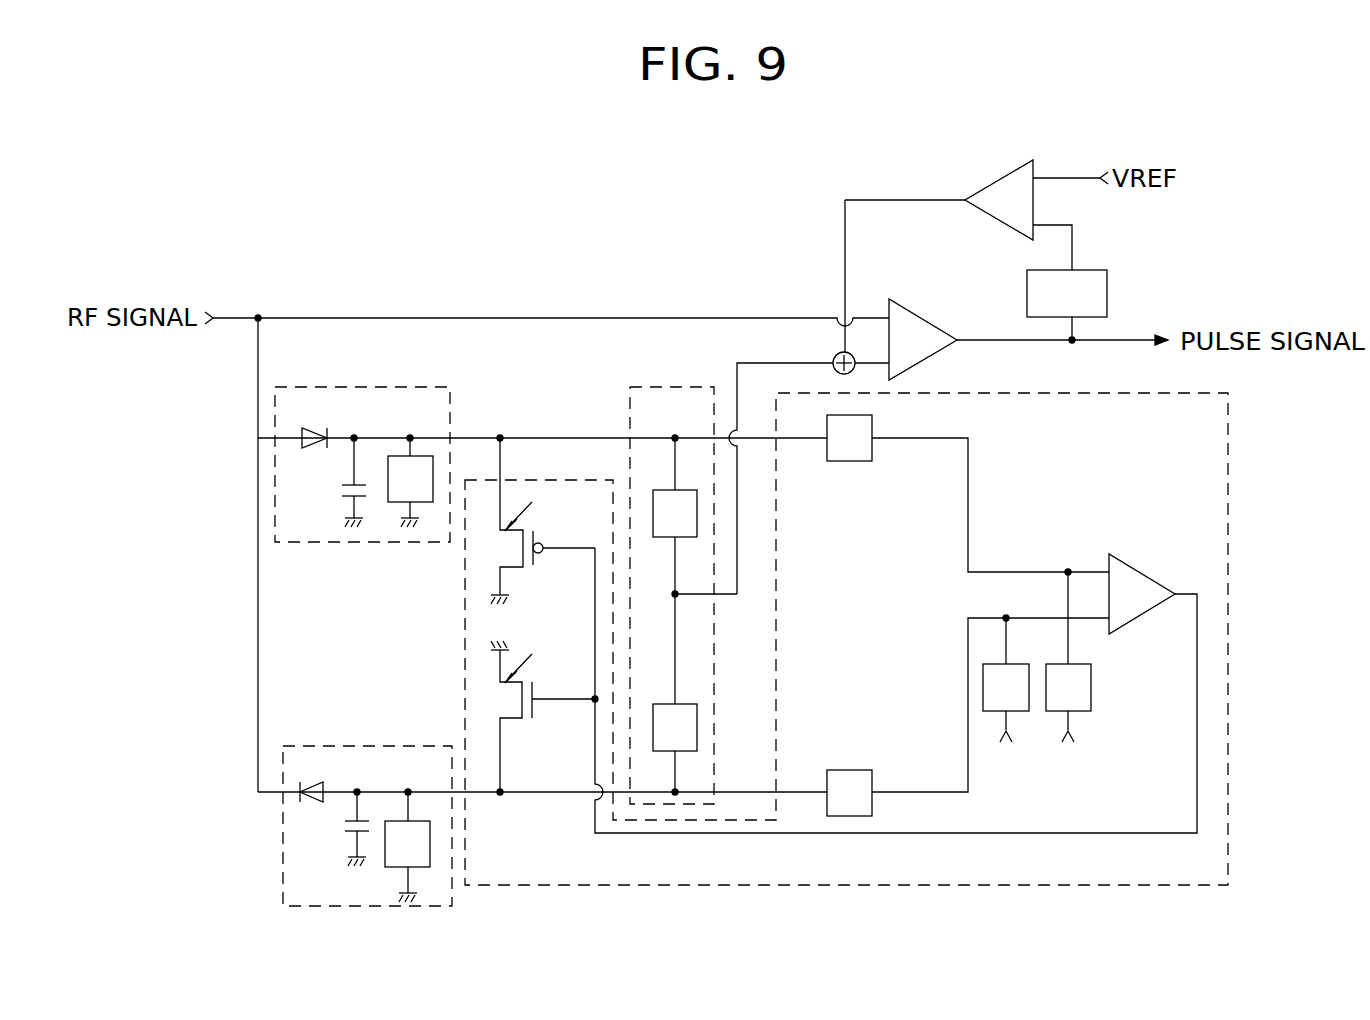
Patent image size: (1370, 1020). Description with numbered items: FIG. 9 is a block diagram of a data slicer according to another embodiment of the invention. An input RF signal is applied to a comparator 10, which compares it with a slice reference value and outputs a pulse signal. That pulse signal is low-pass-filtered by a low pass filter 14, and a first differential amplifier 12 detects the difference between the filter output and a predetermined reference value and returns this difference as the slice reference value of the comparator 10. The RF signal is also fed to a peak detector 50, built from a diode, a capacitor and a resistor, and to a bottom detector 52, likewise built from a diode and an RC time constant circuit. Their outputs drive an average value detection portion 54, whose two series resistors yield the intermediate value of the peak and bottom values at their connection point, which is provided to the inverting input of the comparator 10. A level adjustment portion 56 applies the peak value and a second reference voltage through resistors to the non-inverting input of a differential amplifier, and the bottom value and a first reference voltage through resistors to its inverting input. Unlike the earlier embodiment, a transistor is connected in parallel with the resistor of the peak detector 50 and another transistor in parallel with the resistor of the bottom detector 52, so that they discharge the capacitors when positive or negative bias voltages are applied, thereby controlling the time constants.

The comparator 10 is at (925, 318).
The first differential amplifier 12 is at (990, 186).
The low pass filter 14 is at (1107, 302).
The peak detector 50 is at (405, 387).
The bottom detector 52 is at (368, 746).
The average value detection portion 54 is at (652, 387).
The level adjustment portion 56 is at (1228, 468).